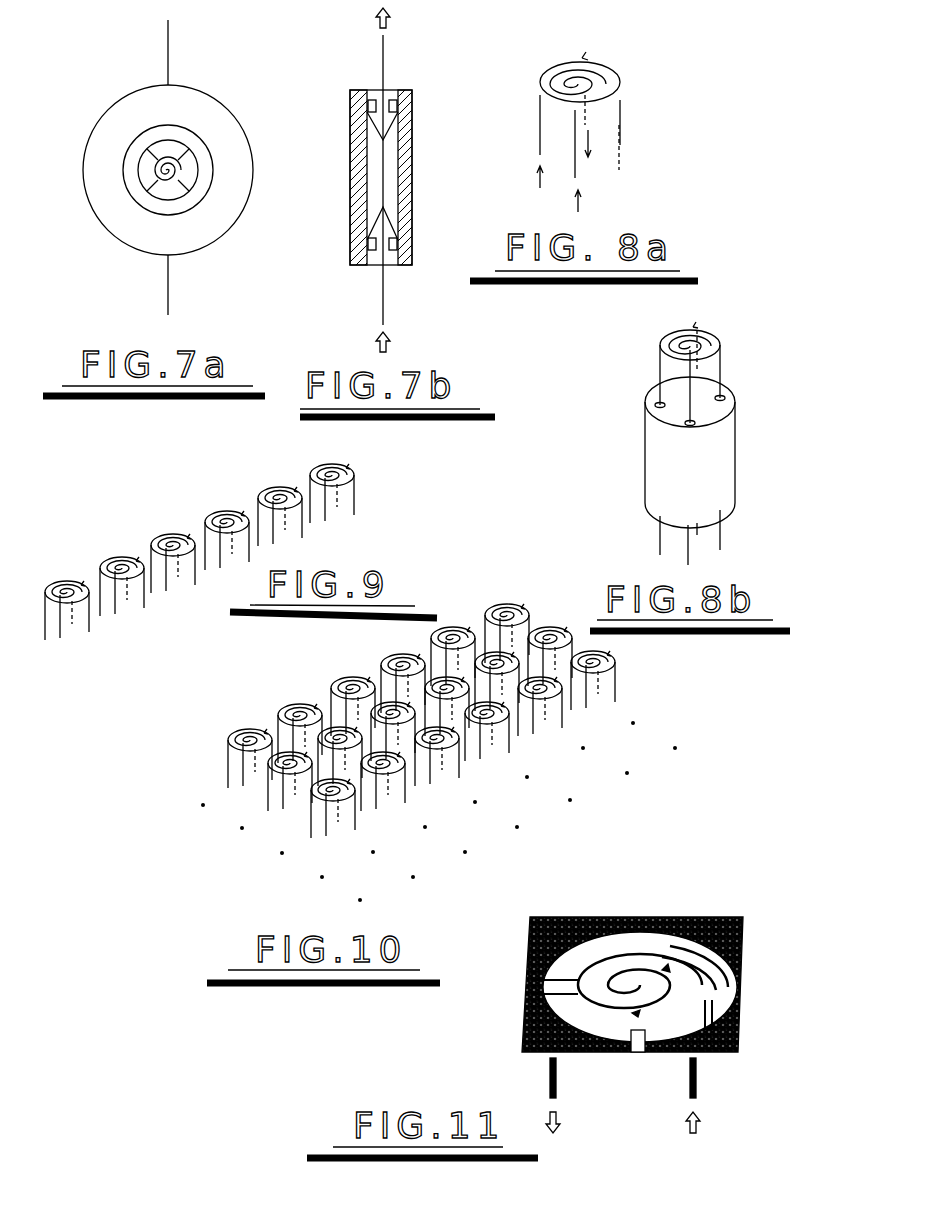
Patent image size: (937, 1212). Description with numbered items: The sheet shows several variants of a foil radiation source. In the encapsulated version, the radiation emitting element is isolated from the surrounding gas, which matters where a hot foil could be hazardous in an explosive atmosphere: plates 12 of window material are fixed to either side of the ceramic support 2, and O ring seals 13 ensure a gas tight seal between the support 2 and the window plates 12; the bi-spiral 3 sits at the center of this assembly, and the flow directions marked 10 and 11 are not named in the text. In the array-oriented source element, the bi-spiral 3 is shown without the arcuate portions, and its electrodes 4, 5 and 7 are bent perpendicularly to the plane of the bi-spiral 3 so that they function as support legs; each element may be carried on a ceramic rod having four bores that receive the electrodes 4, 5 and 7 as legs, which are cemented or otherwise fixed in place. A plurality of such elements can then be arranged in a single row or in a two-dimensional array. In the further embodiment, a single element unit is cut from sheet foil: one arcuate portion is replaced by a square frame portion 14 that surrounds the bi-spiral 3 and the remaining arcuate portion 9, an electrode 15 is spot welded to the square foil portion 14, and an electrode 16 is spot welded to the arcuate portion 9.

In FIG. 7A, the ceramic support 2 is at (238, 112).
In FIG. 8B, the ceramic support 2 is at (696, 400).
In FIG. 9, the ceramic support 2 is at (199, 552).
In FIG. 10, the ceramic support 2 is at (421, 721).
In FIG. 7A, the bi-spiral 3 is at (162, 176).
In FIG. 7B, the bi-spiral 3 is at (410, 200).
In FIG. 8A, the bi-spiral 3 is at (555, 68).
In FIG. 8B, the bi-spiral 3 is at (674, 340).
In FIG. 11, the bi-spiral 3 is at (678, 920).
In FIG. 8A, the electrode 4 is at (538, 130).
In FIG. 8B, the electrode 4 is at (655, 370).
In FIG. 11, the electrode 4 is at (530, 953).
In FIG. 8A, the electrode 5 is at (590, 172).
In FIG. 11, the electrode 5 is at (640, 1052).
In FIG. 8A, the electrode 7 is at (598, 116).
In FIG. 8B, the electrode 7 is at (700, 370).
In FIG. 11, the arcuate portion 9 is at (742, 978).
In FIG. 7B, the inflow direction 10 is at (385, 302).
In FIG. 7A, the outflow direction 11 is at (170, 70).
In FIG. 7B, the outflow direction 11 is at (385, 58).
In FIG. 7A, the window plate 12 is at (233, 180).
In FIG. 7B, the window plate 12 is at (406, 155).
In FIG. 7B, the O ring seal 13 is at (370, 106).
In FIG. 11, the square frame portion 14 is at (740, 1030).
In FIG. 11, the electrode 15 is at (548, 1081).
In FIG. 11, the electrode 16 is at (700, 1085).